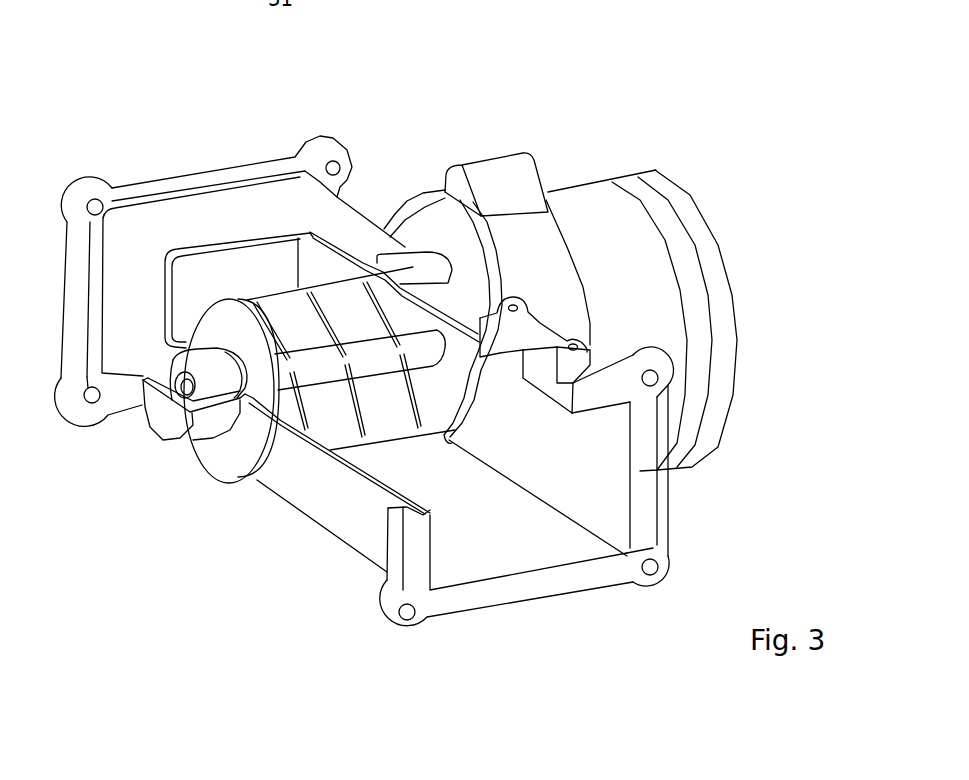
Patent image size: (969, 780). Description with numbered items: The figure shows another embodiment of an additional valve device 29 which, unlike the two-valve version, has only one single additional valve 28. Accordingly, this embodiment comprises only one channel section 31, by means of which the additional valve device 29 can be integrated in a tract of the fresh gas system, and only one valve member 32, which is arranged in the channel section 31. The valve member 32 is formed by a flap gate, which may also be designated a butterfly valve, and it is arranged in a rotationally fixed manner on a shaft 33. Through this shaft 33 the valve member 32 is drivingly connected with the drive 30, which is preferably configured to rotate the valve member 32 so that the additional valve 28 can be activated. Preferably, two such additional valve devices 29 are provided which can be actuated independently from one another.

The additional valve 28 is at (258, 268).
The additional valve device 29 is at (670, 128).
The drive 30 is at (590, 200).
The channel section 31 is at (535, 552).
The valve member 32 is at (331, 427).
The shaft 33 is at (162, 392).